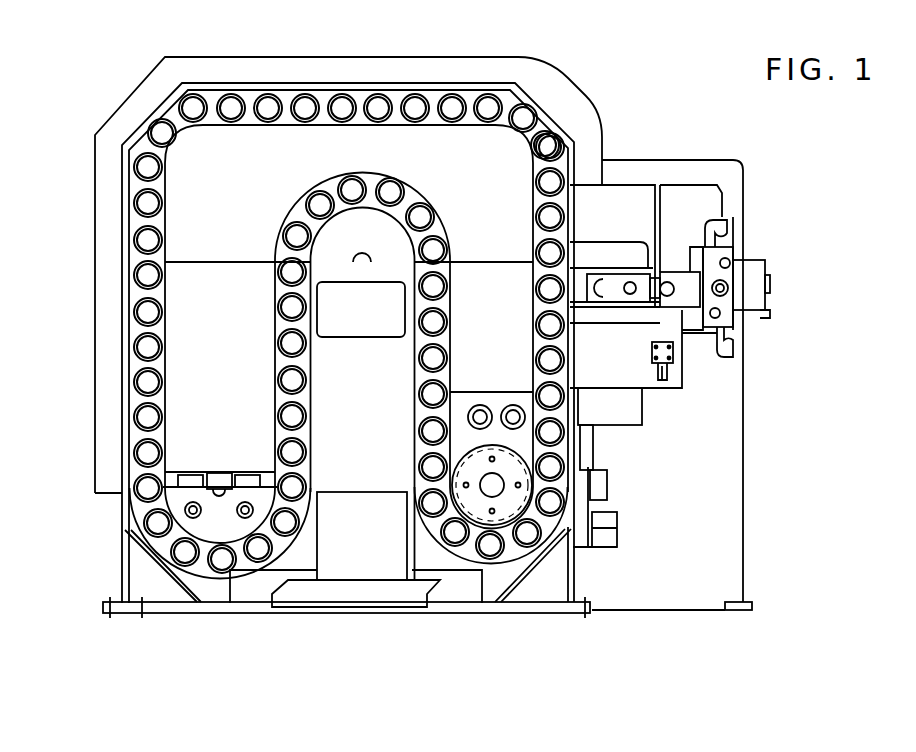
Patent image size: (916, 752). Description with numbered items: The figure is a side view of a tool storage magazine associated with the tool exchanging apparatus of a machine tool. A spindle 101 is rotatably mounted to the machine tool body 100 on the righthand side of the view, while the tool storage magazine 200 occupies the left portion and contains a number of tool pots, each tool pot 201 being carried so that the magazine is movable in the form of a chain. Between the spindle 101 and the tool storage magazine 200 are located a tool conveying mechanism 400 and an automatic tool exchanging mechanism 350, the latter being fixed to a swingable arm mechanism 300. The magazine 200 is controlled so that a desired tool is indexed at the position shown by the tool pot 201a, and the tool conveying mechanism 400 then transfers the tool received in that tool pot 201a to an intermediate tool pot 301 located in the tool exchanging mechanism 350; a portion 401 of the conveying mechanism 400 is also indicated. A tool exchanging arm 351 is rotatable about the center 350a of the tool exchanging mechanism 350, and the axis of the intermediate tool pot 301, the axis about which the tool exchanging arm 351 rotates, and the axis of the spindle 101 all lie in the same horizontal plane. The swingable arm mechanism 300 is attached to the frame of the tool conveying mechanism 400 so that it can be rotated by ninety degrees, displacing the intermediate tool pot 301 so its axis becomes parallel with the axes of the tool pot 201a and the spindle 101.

The machine tool body 100 is at (675, 616).
The spindle 101 is at (767, 314).
The tool storage magazine 200 is at (359, 616).
The tool pot 201 is at (187, 556).
The tool pot 201a is at (545, 292).
The swingable arm mechanism 300 is at (700, 188).
The intermediate tool pot 301 is at (667, 281).
The tool exchanging mechanism 350 is at (727, 273).
The center of the tool exchanging mechanism 350a is at (767, 297).
The tool exchanging arm 351 is at (718, 228).
The tool conveying mechanism 400 is at (620, 278).
The gripper support 401 is at (582, 304).